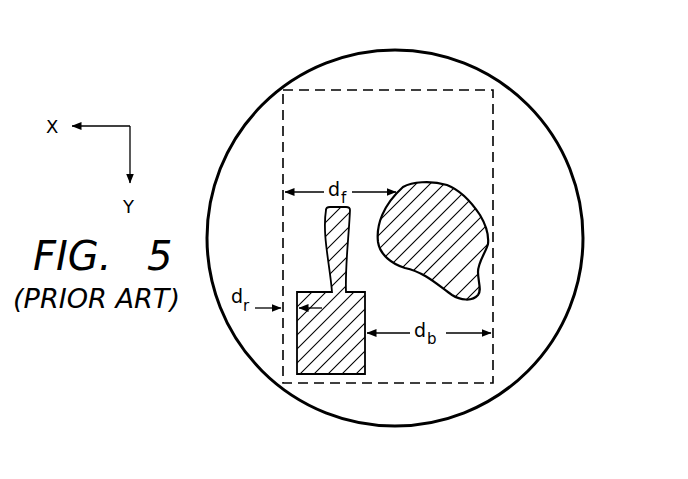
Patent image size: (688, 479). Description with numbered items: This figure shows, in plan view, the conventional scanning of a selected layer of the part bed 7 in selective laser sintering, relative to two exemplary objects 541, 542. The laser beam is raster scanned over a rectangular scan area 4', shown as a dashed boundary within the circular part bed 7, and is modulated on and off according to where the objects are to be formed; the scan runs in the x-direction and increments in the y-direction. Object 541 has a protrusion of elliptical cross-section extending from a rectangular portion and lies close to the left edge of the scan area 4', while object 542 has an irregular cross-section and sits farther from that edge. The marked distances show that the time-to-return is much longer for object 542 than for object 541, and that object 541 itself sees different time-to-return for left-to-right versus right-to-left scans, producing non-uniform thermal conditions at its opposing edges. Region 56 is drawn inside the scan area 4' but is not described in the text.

The part bed 7 is at (580, 208).
The scan area 4' is at (382, 208).
The field region 56 is at (471, 130).
The object 541 is at (365, 348).
The object 542 is at (410, 184).